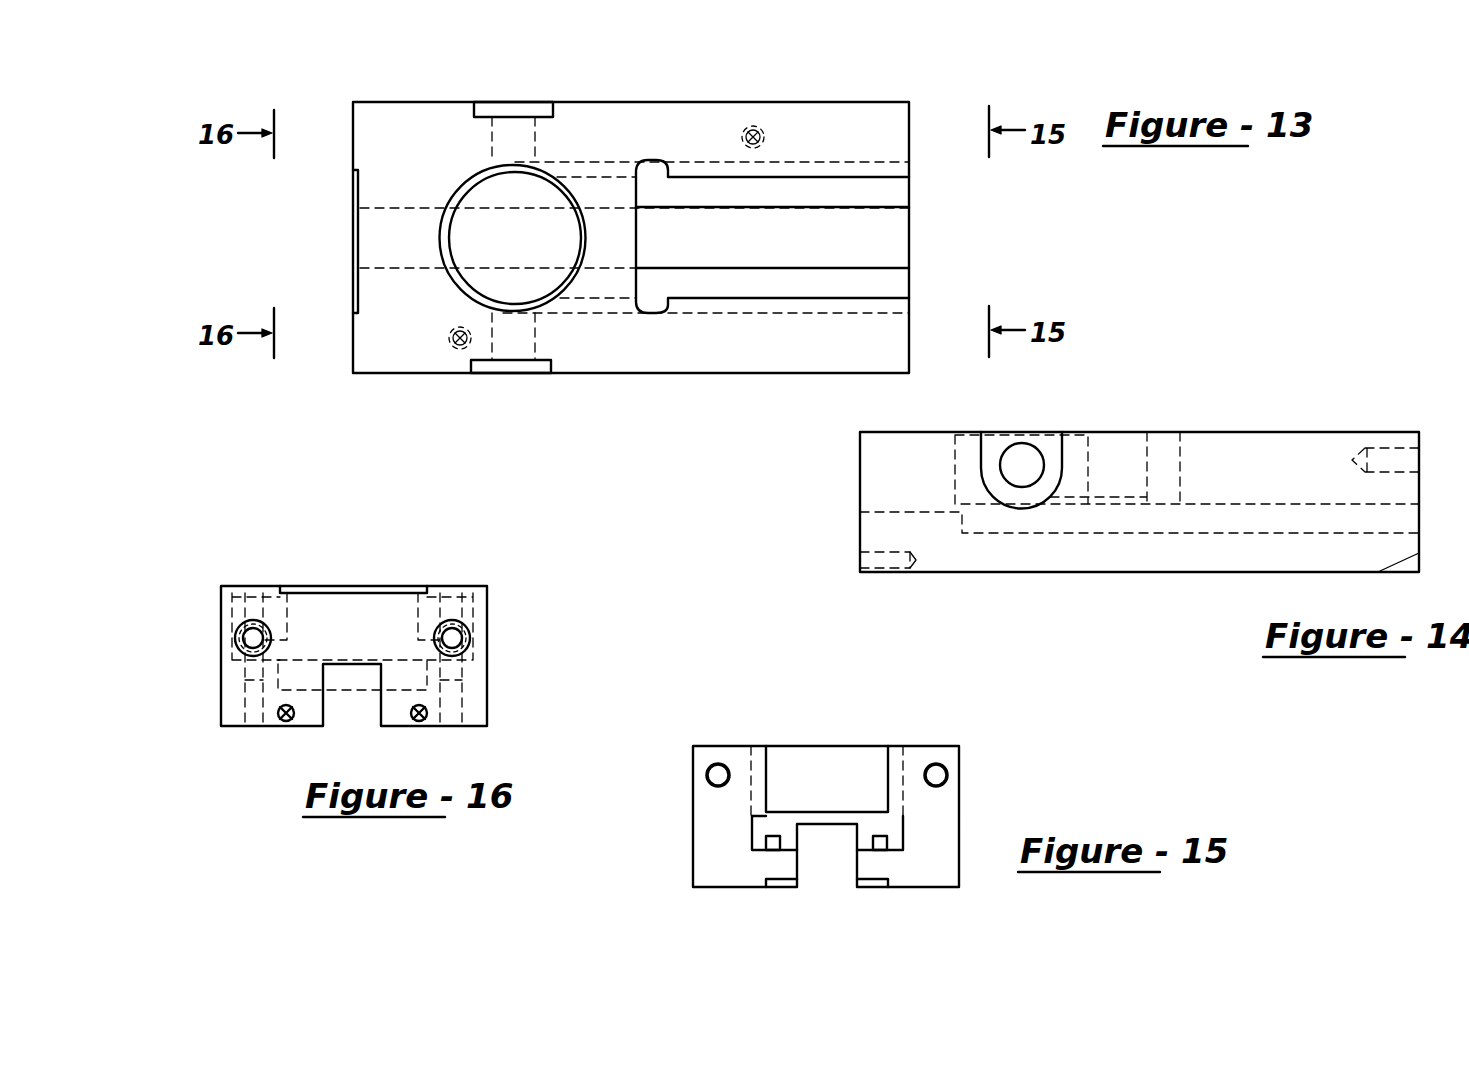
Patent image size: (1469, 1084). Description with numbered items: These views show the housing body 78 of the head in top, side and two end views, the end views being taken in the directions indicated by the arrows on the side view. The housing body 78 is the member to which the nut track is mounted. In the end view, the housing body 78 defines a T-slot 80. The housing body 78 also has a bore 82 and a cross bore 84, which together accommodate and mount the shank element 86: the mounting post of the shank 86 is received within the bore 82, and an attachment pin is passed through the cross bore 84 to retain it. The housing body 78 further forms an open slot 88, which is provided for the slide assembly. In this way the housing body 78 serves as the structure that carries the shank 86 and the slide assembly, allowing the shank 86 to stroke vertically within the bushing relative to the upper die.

In FIG. 13, the housing body 78 is at (675, 102).
In FIG. 14, the housing body 78 is at (1168, 432).
In FIG. 16, the housing body 78 is at (378, 586).
In FIG. 15, the housing body 78 is at (944, 746).
In FIG. 16, the T-slot 80 is at (287, 622).
In FIG. 15, the T-slot 80 is at (752, 826).
In FIG. 13, the bore 82 is at (508, 313).
In FIG. 13, the cross bore 84 is at (492, 148).
In FIG. 14, the cross bore 84 is at (1003, 461).
In FIG. 13, the shank element 86 is at (483, 275).
In FIG. 13, the open slot 88 is at (742, 207).
In FIG. 15, the open slot 88 is at (878, 768).